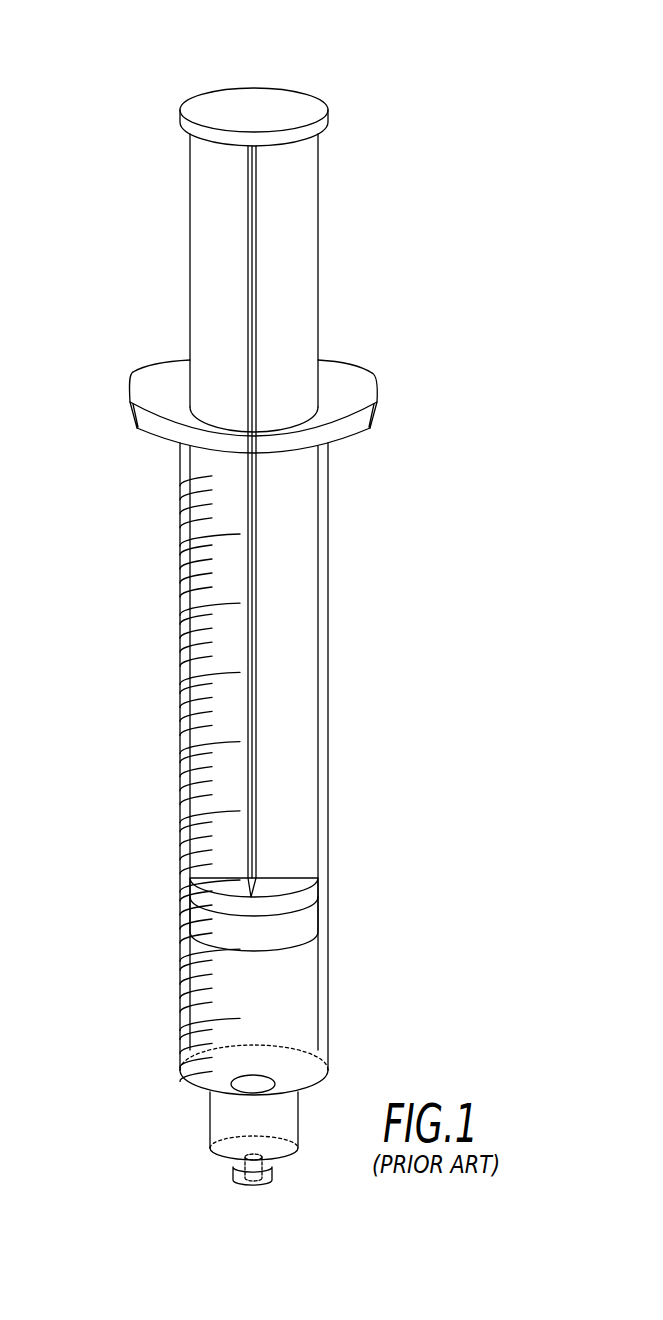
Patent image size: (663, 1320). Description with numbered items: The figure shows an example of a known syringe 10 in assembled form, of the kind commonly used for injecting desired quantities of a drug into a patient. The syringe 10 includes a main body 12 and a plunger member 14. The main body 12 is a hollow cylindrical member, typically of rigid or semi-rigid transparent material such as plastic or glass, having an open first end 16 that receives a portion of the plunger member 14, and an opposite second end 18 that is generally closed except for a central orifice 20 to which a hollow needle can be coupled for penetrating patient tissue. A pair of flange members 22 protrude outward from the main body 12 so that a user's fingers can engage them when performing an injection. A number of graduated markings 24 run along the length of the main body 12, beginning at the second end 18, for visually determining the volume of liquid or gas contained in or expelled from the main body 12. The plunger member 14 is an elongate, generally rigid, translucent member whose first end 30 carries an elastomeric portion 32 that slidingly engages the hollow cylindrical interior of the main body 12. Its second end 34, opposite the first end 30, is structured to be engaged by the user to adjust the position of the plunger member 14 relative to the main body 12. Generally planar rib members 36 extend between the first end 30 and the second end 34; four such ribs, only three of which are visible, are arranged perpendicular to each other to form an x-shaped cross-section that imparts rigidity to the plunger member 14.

The syringe 10 is at (432, 646).
The main body 12 is at (290, 1022).
The plunger member 14 is at (207, 242).
The open first end 16 is at (344, 353).
The second end 18 is at (200, 1148).
The central orifice 20 is at (247, 1194).
The flange members 22 is at (119, 427).
The graduated markings 24 is at (172, 680).
The first end 30 is at (308, 950).
The elastomeric portion 32 is at (307, 918).
The second end 34 is at (297, 87).
The planar rib members 36 is at (208, 180).